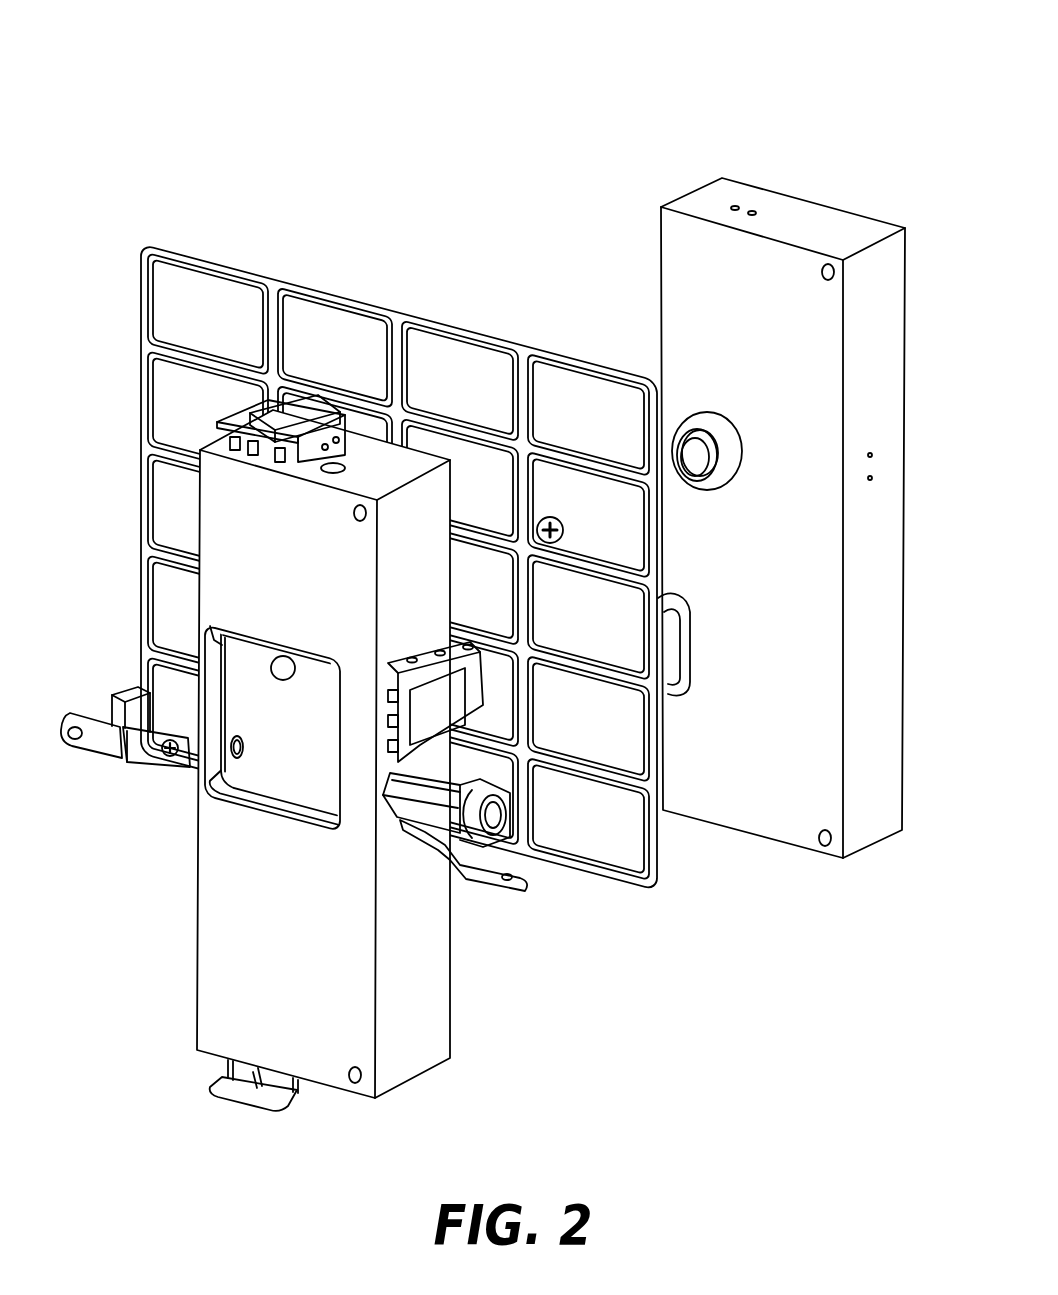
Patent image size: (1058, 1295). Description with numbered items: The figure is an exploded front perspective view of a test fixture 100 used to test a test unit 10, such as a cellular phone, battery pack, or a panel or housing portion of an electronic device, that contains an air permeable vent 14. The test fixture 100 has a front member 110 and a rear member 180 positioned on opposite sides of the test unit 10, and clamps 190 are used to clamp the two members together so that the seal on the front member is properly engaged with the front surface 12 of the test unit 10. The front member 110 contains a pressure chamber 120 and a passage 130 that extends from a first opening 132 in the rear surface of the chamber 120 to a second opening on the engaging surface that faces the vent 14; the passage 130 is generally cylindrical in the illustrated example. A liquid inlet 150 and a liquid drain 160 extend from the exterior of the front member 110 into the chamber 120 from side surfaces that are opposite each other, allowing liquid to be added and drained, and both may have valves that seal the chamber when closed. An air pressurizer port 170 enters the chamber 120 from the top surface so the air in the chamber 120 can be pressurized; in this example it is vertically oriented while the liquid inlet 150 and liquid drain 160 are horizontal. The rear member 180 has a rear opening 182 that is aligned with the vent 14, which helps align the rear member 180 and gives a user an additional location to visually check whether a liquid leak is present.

The test fixture 100 is at (240, 99).
The test unit 10 is at (170, 290).
The front surface 12 is at (628, 553).
The air permeable vent 14 is at (546, 517).
The front member 110 is at (268, 1008).
The pressure chamber 120 is at (298, 757).
The passage 130 is at (275, 665).
The first opening 132 is at (228, 632).
The liquid inlet 150 is at (438, 808).
The liquid drain 160 is at (165, 752).
The air pressurizer port 170 is at (334, 463).
The rear member 180 is at (809, 233).
The rear opening 182 is at (723, 450).
The clamps 190 is at (307, 412).